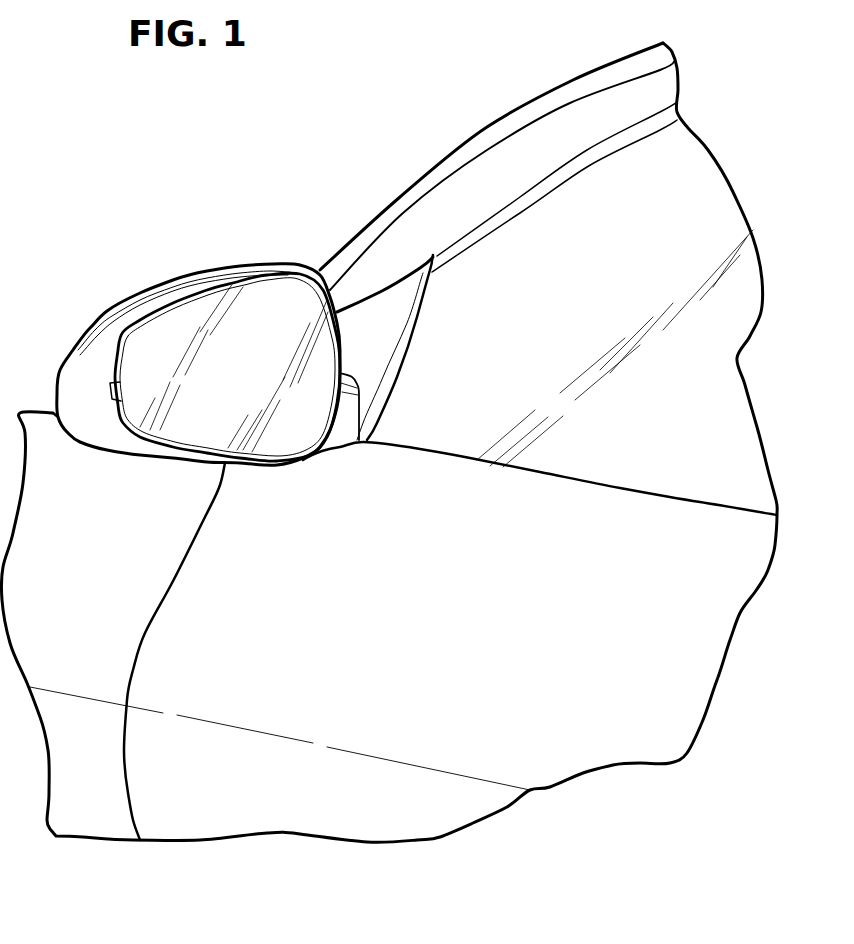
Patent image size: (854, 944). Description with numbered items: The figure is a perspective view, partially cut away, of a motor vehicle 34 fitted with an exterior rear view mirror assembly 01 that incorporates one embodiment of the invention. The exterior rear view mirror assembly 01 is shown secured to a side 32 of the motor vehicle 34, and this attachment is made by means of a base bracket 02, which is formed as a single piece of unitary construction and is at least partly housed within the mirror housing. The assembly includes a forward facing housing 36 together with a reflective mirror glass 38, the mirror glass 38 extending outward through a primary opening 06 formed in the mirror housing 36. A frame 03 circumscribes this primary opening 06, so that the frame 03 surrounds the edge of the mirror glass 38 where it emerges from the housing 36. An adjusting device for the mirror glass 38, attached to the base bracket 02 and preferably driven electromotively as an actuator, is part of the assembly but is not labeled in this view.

The exterior rear view mirror assembly 01 is at (230, 345).
The base bracket 02 is at (338, 437).
The frame 03 is at (114, 418).
The primary opening 06 is at (300, 277).
The side 32 is at (297, 835).
The motor vehicle 34 is at (560, 104).
The mirror housing 36 is at (73, 350).
The mirror glass 38 is at (266, 377).